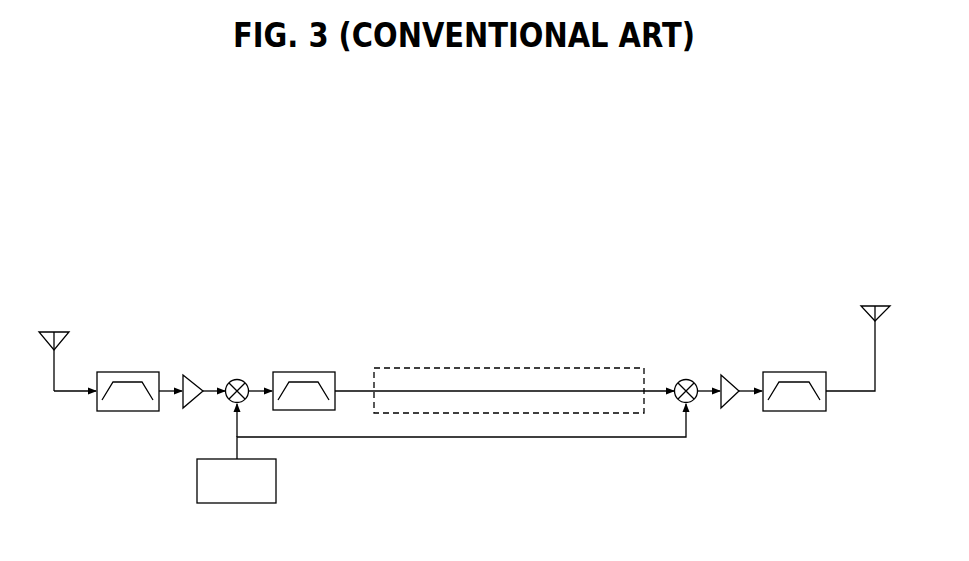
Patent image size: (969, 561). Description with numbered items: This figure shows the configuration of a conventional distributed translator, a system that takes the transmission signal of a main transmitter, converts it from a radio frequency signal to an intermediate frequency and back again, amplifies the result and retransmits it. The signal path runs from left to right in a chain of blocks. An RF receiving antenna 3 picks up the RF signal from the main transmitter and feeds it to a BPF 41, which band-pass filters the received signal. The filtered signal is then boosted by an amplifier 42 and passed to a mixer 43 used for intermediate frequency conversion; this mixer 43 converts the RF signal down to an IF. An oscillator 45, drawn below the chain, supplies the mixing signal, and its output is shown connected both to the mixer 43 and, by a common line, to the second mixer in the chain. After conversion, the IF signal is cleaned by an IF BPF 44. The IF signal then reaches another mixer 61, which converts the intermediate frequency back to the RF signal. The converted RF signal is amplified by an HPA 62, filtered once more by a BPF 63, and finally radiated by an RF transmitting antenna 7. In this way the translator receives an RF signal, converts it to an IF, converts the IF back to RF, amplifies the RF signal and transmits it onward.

The RF receiving antenna 3 is at (54, 332).
The BPF 41 is at (126, 372).
The amplifier 42 is at (183, 375).
The mixer for intermediate frequency conversion 43 is at (237, 379).
The IF BPF 44 is at (304, 372).
The oscillator 45 is at (197, 478).
The mixer 61 is at (686, 379).
The HPA 62 is at (721, 375).
The BPF 63 is at (795, 372).
The RF transmitting antenna 7 is at (875, 306).